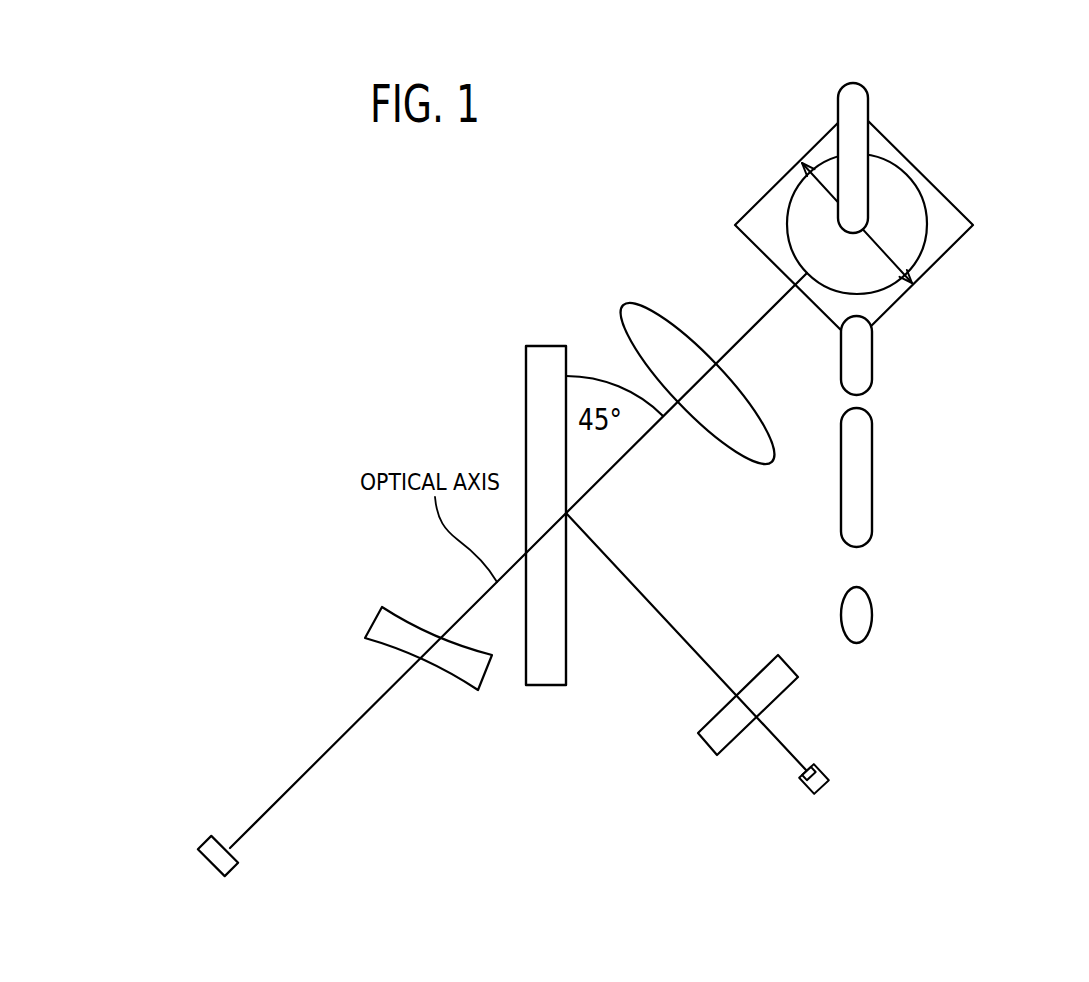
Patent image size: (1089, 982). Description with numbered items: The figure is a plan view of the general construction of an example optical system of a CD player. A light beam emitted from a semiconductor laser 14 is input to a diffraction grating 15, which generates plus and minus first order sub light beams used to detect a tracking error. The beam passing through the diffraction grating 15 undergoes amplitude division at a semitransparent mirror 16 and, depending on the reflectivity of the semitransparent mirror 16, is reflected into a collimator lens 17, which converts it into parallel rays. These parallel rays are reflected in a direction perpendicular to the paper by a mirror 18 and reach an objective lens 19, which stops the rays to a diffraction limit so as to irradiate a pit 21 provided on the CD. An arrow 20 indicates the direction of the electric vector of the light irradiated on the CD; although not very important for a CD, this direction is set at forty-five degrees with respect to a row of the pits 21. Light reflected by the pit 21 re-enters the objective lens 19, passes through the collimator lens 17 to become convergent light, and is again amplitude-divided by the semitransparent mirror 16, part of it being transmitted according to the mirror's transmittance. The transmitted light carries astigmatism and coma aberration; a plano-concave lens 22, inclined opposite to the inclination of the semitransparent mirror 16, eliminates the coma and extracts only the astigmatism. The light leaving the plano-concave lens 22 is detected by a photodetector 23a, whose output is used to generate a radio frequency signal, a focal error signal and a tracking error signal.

The semiconductor laser 14 is at (815, 787).
The diffraction grating 15 is at (710, 737).
The semitransparent mirror 16 is at (557, 666).
The collimator lens 17 is at (728, 437).
The mirror 18 is at (933, 255).
The objective lens 19 is at (897, 180).
The arrow 20 is at (883, 252).
The pit 21 is at (872, 493).
The plano-concave lens 22 is at (448, 668).
The photodetector 23a is at (208, 847).